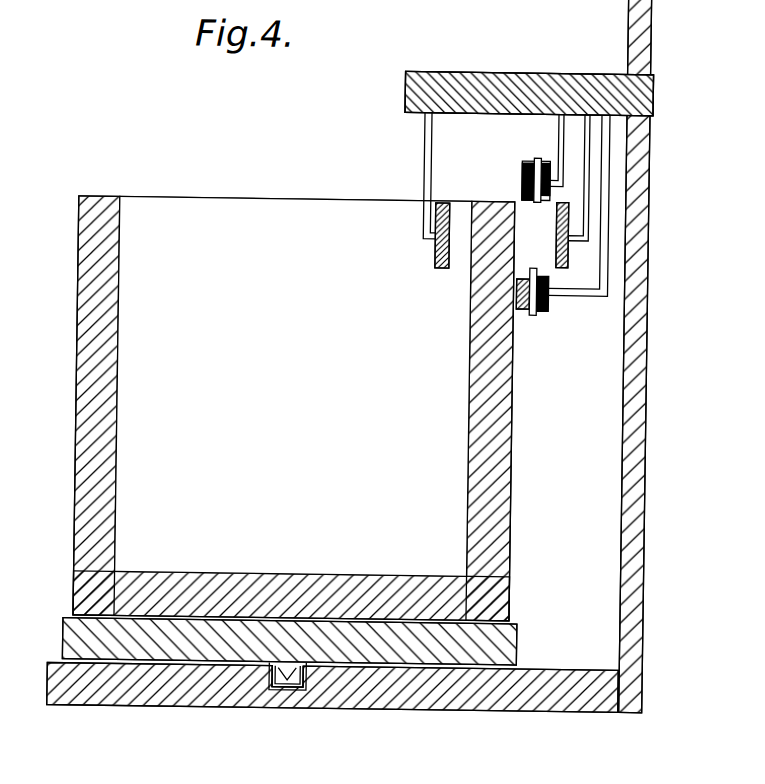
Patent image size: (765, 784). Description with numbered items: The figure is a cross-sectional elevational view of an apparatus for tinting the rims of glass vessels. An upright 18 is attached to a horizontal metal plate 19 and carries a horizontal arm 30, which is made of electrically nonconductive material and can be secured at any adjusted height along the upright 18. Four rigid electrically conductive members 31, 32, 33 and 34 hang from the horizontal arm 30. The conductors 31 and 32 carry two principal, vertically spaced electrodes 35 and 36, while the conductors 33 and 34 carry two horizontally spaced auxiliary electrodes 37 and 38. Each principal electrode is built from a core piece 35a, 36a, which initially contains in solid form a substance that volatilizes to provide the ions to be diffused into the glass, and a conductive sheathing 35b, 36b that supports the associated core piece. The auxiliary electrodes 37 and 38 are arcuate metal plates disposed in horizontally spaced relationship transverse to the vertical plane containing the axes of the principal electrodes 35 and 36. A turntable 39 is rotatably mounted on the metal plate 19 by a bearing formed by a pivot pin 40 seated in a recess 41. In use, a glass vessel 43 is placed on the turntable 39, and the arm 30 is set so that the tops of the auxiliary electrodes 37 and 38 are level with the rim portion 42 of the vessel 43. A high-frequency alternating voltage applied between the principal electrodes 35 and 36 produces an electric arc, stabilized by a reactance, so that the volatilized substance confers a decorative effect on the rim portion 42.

The upright 18 is at (635, 247).
The horizontal metal plate 19 is at (494, 688).
The horizontal arm 30 is at (461, 95).
The rigid electrically conductive member 31 is at (549, 113).
The rigid electrically conductive member 32 is at (606, 149).
The rigid electrically conductive member 33 is at (419, 145).
The rigid electrically conductive member 34 is at (581, 141).
The principal electrode 35 is at (503, 162).
The core piece 35a is at (534, 159).
The conductive sheathing 35b is at (522, 189).
The principal electrode 36 is at (503, 334).
The core piece 36a is at (532, 312).
The conductive sheathing 36b is at (514, 307).
The auxiliary electrode 37 is at (434, 253).
The auxiliary electrode 38 is at (555, 242).
The turntable 39 is at (502, 659).
The pivot pin 40 is at (279, 690).
The recess 41 is at (307, 688).
The rim portion 42 is at (486, 297).
The glass vessel 43 is at (328, 409).